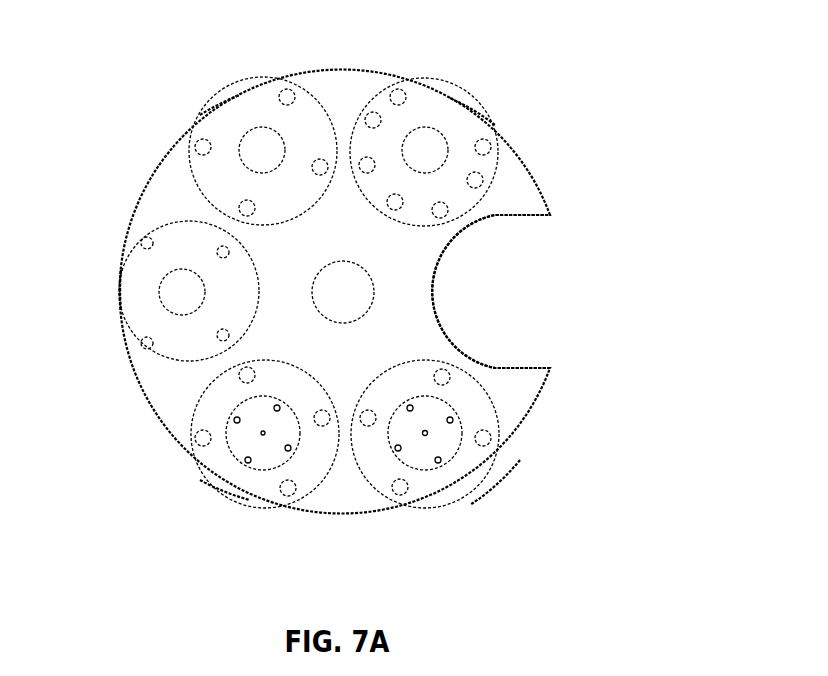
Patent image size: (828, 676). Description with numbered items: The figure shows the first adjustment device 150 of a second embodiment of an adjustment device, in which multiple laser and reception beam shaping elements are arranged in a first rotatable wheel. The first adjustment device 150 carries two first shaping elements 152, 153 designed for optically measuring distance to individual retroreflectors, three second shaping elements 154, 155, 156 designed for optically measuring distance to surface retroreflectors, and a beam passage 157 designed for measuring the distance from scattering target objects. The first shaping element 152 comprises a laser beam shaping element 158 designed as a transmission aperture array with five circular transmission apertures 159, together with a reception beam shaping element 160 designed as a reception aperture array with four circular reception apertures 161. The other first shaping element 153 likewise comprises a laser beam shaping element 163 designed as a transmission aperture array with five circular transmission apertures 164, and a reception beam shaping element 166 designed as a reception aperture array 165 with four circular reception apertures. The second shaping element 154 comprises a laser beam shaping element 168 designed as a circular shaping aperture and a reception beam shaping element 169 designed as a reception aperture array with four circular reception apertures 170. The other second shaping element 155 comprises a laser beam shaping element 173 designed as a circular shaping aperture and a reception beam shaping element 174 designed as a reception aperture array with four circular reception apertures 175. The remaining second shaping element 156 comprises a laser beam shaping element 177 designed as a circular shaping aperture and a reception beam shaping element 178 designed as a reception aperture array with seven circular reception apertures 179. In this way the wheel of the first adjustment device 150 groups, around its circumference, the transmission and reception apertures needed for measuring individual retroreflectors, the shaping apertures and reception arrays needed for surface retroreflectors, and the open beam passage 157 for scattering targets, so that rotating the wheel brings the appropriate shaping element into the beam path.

The first adjustment device 150 is at (615, 152).
The first shaping element 152 is at (463, 512).
The first shaping element 153 is at (230, 508).
The second shaping element 154 is at (103, 282).
The second shaping element 155 is at (207, 88).
The second shaping element 156 is at (474, 98).
The beam passage 157 is at (515, 295).
The laser beam shaping element 158 is at (420, 462).
The transmission apertures 159 is at (425, 430).
The reception beam shaping element 160 is at (393, 390).
The reception apertures 161 is at (484, 447).
The laser beam shaping element 163 is at (237, 448).
The transmission apertures 164 is at (279, 404).
The reception aperture array 165 is at (193, 423).
The reception beam shaping element 166 is at (289, 497).
The laser beam shaping element 168 is at (182, 292).
The reception beam shaping element 169 is at (240, 276).
The reception apertures 170 is at (141, 343).
The laser beam shaping element 173 is at (262, 150).
The reception beam shaping element 174 is at (277, 203).
The reception apertures 175 is at (287, 90).
The laser beam shaping element 177 is at (425, 150).
The reception beam shaping element 178 is at (420, 200).
The reception apertures 179 is at (397, 90).